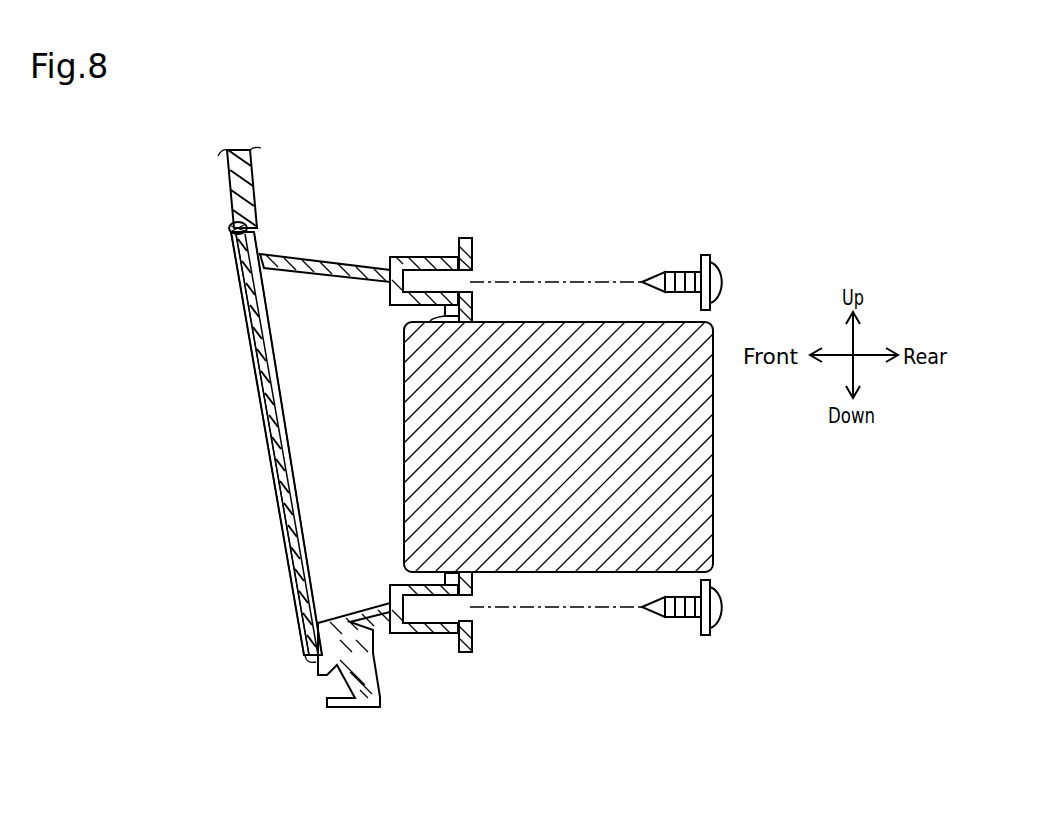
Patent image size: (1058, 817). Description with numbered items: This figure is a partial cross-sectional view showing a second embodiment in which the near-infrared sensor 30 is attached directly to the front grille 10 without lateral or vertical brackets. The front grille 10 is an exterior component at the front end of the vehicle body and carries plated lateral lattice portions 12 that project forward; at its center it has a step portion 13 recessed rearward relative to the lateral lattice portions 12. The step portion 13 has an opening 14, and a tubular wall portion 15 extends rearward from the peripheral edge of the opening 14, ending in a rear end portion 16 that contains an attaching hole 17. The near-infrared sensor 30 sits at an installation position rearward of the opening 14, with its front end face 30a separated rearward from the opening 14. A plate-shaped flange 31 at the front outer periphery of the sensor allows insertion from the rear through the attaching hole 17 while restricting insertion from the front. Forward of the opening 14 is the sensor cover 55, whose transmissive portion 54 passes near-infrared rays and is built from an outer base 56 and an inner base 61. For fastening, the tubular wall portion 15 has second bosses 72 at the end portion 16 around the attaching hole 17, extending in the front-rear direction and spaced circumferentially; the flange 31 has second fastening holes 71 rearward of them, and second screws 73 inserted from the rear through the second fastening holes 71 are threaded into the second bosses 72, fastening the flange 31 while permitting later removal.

The front grille 10 is at (238, 188).
The lateral lattice portions 12 is at (318, 677).
The step portion 13 is at (232, 232).
The opening 14 is at (268, 275).
The tubular wall portion 15 is at (316, 261).
The end portion 16 is at (445, 310).
The attaching hole 17 is at (440, 328).
The near-infrared sensor 30 is at (713, 508).
The front end face 30a is at (404, 525).
The flange 31 is at (466, 238).
The transmissive portion 54 is at (278, 528).
The sensor cover 55 is at (278, 528).
The outer base 56 is at (258, 367).
The inner base 61 is at (275, 378).
The second fastening holes 71 is at (470, 274).
The second bosses 72 is at (423, 257).
The second screws 73 is at (686, 272).